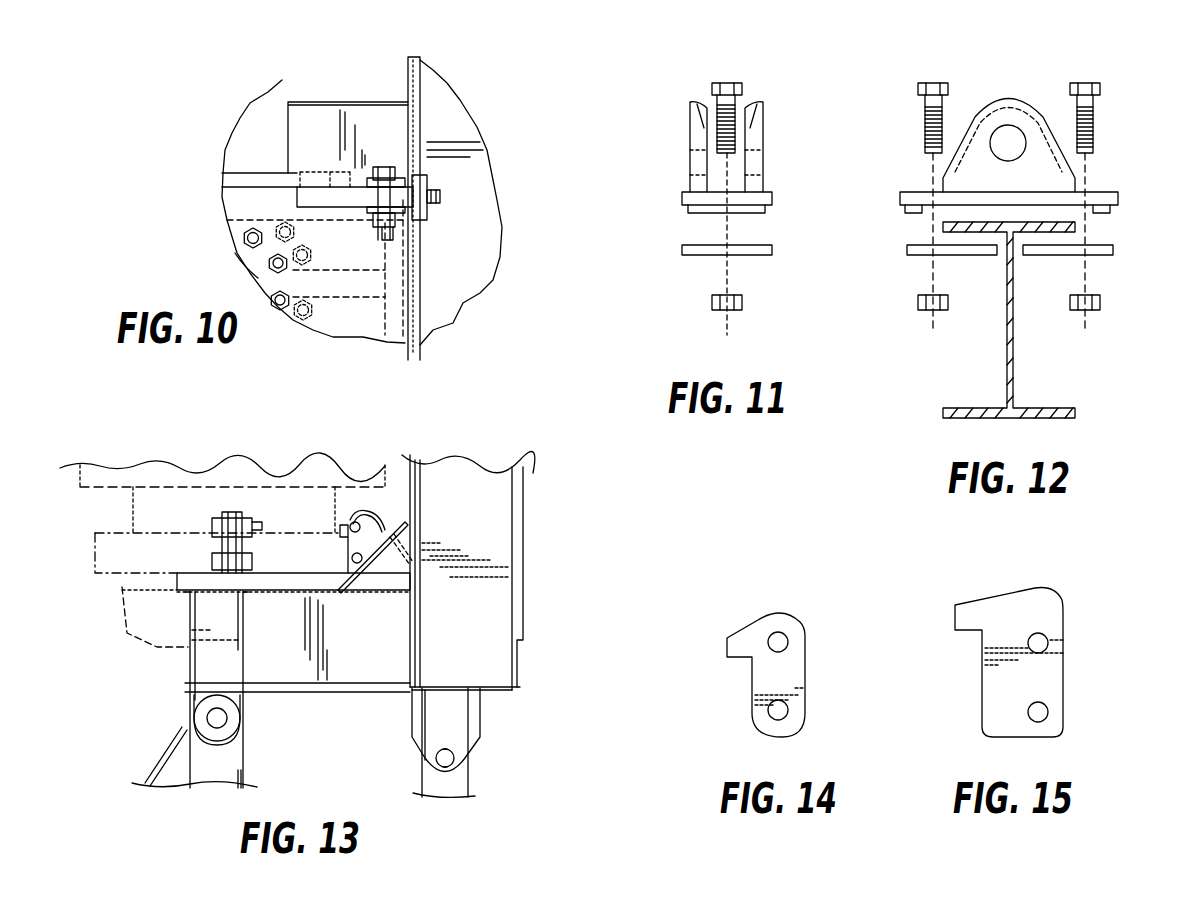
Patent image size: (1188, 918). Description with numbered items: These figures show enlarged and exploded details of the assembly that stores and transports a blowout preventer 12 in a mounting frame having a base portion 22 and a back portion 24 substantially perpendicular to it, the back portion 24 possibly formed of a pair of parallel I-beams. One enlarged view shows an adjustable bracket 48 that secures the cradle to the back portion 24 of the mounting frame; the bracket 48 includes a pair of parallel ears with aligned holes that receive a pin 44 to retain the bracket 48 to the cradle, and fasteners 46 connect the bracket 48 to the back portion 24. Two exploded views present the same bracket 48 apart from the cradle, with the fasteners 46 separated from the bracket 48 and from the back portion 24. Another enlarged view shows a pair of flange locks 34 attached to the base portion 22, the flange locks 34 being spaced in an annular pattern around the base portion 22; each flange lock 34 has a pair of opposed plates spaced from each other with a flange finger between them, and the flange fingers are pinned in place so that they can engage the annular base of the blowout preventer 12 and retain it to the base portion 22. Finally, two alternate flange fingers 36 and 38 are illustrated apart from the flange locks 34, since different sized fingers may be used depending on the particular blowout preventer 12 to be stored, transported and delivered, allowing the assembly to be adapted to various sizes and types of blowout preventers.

In FIG. 13, the blowout preventer 12 is at (157, 617).
In FIG. 13, the base portion 22 is at (360, 663).
In FIG. 10, the back portion 24 is at (450, 117).
In FIG. 11, the back portion 24 is at (697, 255).
In FIG. 12, the back portion 24 is at (1007, 350).
In FIG. 13, the back portion 24 is at (493, 523).
In FIG. 13, the flange lock 34 is at (223, 512).
In FIG. 14, the flange finger 36 is at (748, 635).
In FIG. 15, the flange finger 38 is at (1052, 678).
In FIG. 10, the pin 44 is at (388, 167).
In FIG. 11, the fastener 46 is at (710, 90).
In FIG. 12, the fastener 46 is at (918, 90).
In FIG. 10, the adjustable bracket 48 is at (430, 215).
In FIG. 11, the adjustable bracket 48 is at (682, 197).
In FIG. 12, the adjustable bracket 48 is at (995, 122).